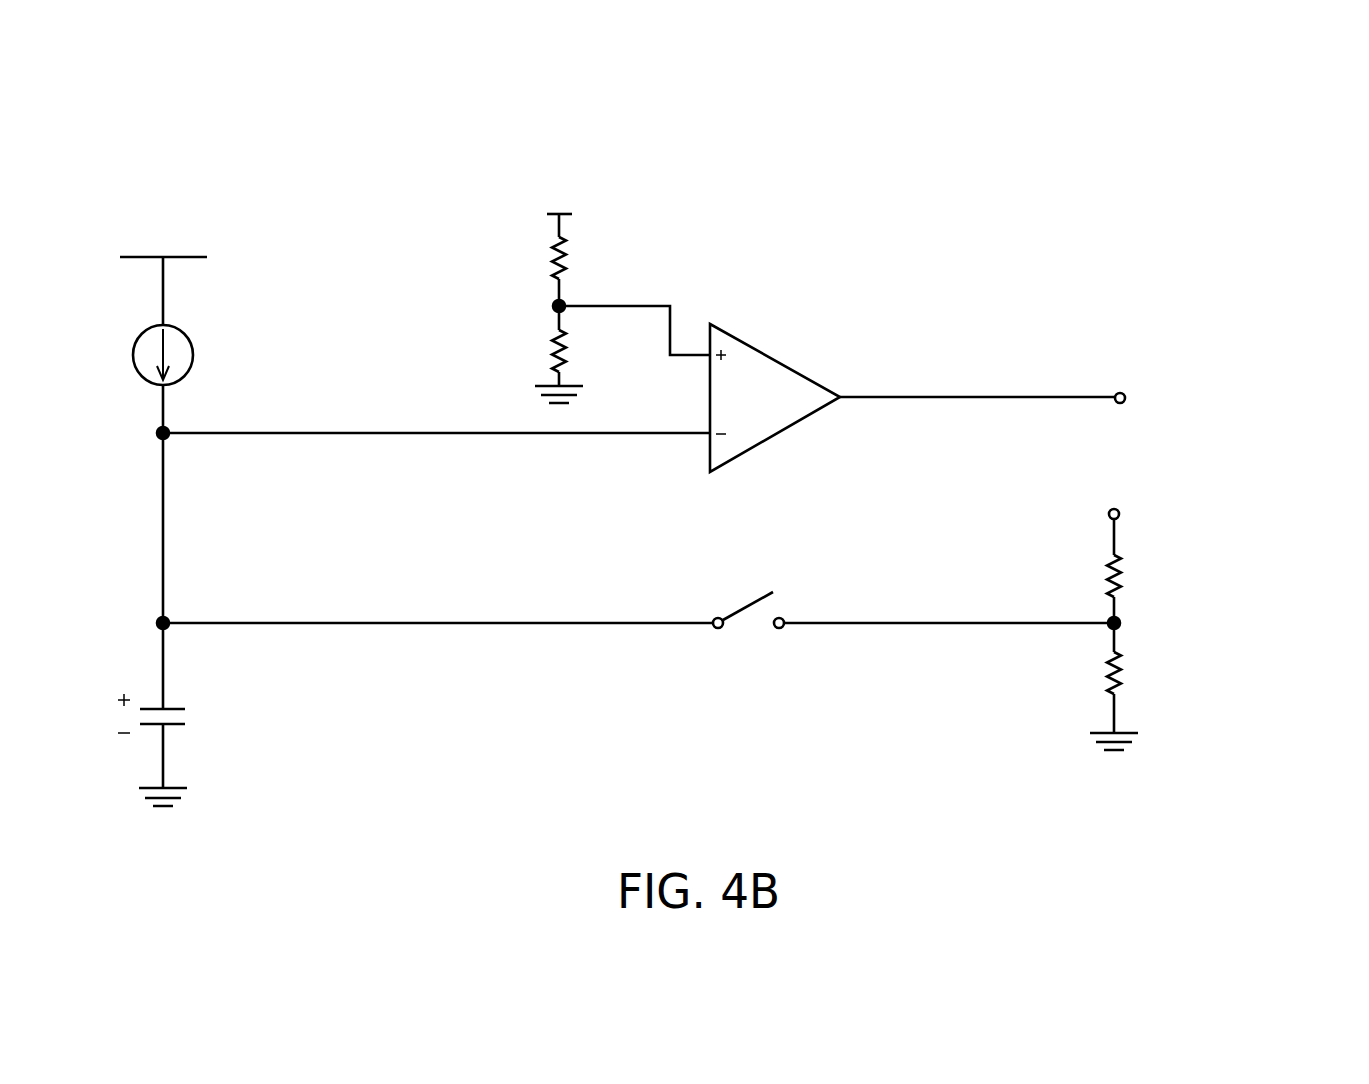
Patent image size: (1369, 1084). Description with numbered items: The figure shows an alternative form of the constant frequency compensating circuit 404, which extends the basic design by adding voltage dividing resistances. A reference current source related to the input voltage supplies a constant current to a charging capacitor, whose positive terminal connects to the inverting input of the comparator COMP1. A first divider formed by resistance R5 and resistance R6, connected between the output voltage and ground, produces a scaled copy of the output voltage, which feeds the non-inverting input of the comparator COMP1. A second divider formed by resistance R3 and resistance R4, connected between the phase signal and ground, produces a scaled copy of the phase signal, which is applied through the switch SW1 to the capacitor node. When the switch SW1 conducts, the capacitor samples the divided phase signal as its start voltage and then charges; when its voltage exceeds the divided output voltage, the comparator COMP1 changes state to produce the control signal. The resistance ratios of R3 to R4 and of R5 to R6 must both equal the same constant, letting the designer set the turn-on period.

The constant frequency compensating circuit 404 is at (1209, 235).
The voltage dividing resistance R5 is at (581, 258).
The voltage dividing resistance R6 is at (581, 352).
The comparator COMP1 is at (778, 360).
The switch SW1 is at (748, 631).
The voltage dividing resistance R3 is at (1137, 576).
The voltage dividing resistance R4 is at (1137, 673).